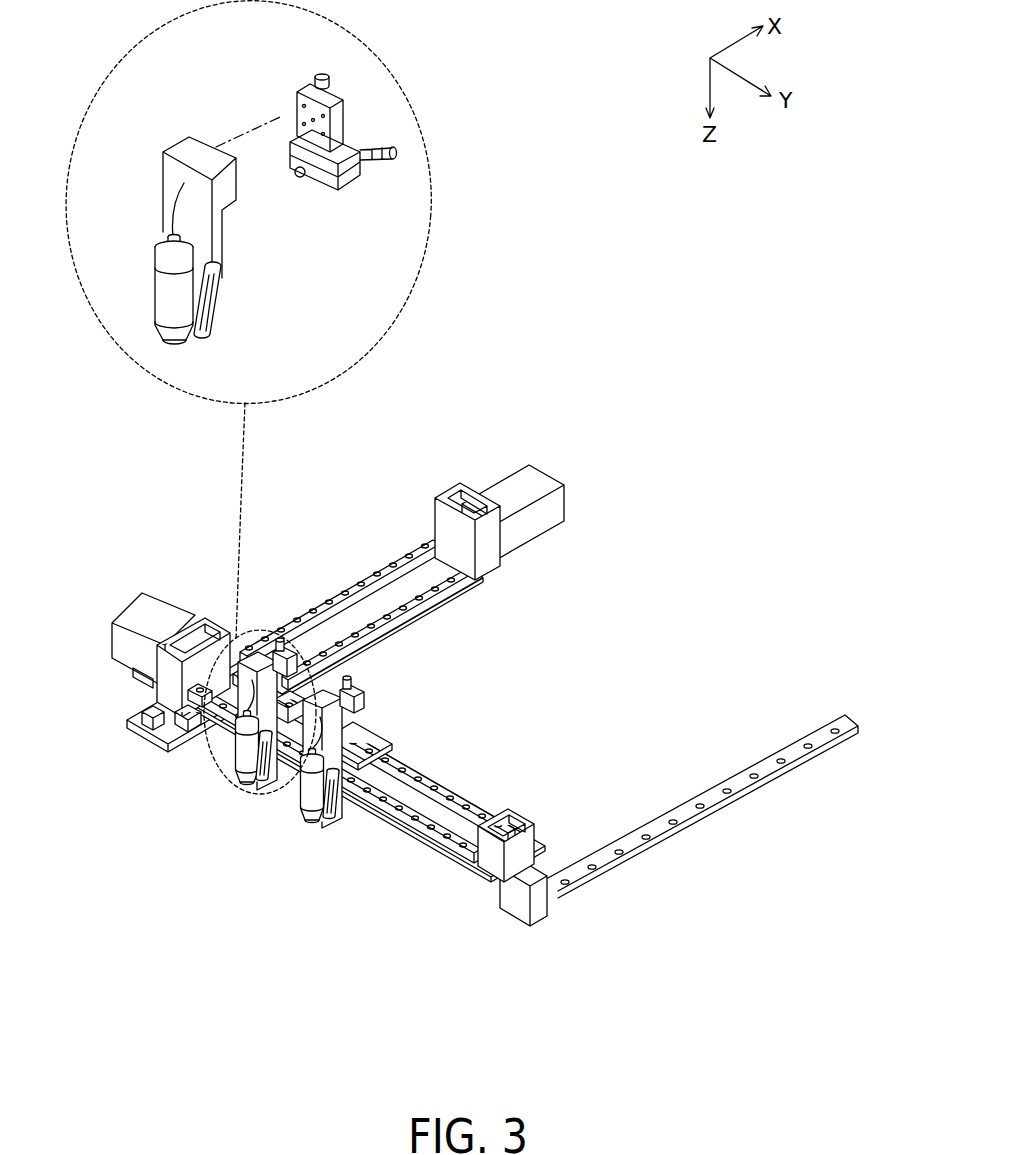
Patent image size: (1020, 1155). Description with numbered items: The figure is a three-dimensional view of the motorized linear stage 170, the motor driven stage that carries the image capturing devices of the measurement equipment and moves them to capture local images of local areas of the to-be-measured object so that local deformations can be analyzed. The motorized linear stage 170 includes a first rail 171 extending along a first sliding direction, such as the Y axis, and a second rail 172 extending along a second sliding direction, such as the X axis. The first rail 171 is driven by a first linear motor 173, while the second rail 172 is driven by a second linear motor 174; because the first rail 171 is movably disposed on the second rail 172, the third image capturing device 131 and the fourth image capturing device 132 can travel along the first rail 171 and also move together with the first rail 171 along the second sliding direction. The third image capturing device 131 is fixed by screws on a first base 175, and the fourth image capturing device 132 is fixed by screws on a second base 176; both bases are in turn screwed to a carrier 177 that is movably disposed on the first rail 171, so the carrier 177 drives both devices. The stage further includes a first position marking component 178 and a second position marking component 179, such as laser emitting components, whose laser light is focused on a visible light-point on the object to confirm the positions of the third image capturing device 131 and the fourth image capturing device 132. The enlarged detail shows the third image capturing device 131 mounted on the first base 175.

The third image capturing device 131 is at (162, 308).
The fourth image capturing device 132 is at (310, 797).
The motorized linear stage 170 is at (477, 581).
The first rail 171 is at (229, 677).
The second rail 172 is at (344, 605).
The first linear motor 173 is at (165, 611).
The second linear motor 174 is at (507, 481).
The first base 175 is at (303, 83).
The second base 176 is at (365, 703).
The carrier 177 is at (396, 746).
The first position marking component 178 is at (273, 786).
The second position marking component 179 is at (343, 811).